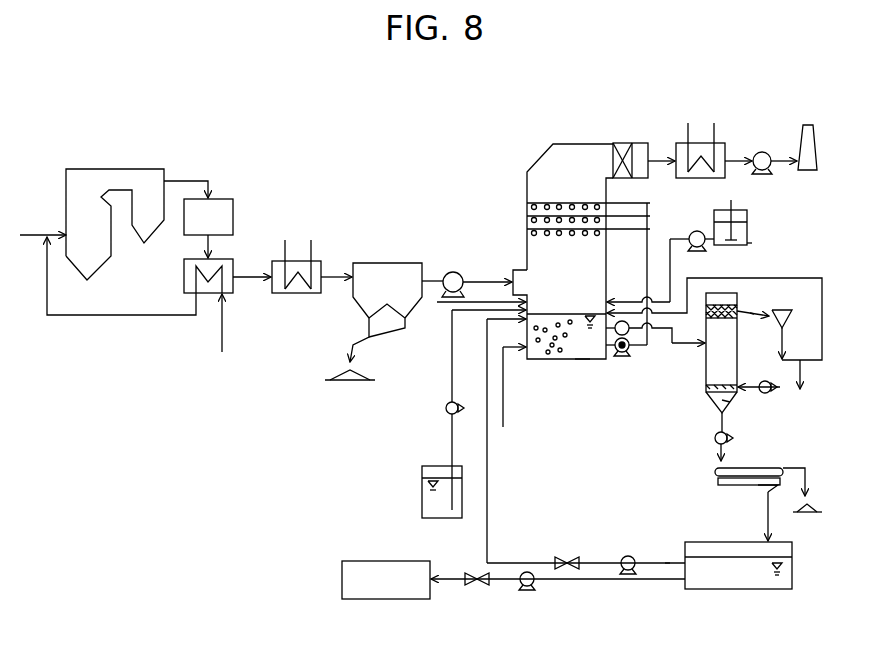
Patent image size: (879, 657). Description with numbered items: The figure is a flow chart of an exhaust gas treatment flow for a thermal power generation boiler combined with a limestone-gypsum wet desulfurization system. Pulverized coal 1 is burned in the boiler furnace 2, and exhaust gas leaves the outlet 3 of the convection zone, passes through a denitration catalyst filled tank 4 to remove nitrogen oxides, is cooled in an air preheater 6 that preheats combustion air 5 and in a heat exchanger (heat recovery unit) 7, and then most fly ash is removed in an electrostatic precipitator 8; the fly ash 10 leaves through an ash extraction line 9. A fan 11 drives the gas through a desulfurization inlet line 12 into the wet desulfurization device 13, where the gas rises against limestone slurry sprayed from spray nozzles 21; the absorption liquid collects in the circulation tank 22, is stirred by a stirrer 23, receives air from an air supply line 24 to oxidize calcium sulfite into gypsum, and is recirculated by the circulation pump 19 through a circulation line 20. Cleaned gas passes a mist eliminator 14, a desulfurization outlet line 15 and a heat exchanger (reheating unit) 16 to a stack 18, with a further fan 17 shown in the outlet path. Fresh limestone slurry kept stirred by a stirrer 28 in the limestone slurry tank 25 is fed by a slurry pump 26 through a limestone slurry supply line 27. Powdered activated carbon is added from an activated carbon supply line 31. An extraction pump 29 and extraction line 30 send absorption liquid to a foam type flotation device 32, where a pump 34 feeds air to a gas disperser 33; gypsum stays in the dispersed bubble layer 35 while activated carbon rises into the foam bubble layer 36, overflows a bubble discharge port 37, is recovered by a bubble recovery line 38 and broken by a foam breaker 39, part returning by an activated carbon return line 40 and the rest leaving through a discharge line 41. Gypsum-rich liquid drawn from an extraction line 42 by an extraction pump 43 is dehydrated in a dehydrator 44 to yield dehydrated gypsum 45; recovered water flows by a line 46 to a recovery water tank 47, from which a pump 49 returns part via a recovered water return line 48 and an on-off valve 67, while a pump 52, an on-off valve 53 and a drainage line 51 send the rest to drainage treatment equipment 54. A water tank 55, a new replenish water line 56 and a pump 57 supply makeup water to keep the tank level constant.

The pulverized coal 1 is at (108, 245).
The boiler furnace 2 is at (115, 196).
The outlet of convection zone 3 is at (186, 159).
The denitration catalyst filled tank 4 is at (236, 228).
The combustion air 5 is at (195, 326).
The air preheater 6 is at (182, 278).
The heat exchanger (heat recovery unit) 7 is at (292, 300).
The electrostatic precipitator 8 is at (396, 282).
The ash extraction line 9 is at (390, 343).
The fly ash 10 is at (350, 406).
The fan 11 is at (453, 256).
The desulfurization inlet line 12 is at (487, 252).
The wet desulfurization device 13 is at (541, 251).
The mist eliminator 14 is at (630, 134).
The desulfurization outlet line 15 is at (661, 133).
The heat exchanger (reheating unit) 16 is at (710, 134).
The fan 17 is at (761, 132).
The stack 18 is at (803, 175).
The desulfurization/absorption liquid circulation pump 19 is at (627, 309).
The circulation line 20 is at (694, 270).
The spray nozzles 21 is at (560, 213).
The circulation tank 22 is at (587, 386).
The stirrer 23 is at (553, 366).
The air supply line 24 is at (533, 392).
The limestone slurry tank 25 is at (777, 252).
The slurry pump 26 is at (701, 220).
The limestone slurry supply line 27 is at (676, 217).
The stirrer 28 is at (749, 220).
The extraction pump 29 is at (638, 281).
The extraction line 30 is at (639, 346).
The activated carbon supply line 31 is at (474, 432).
The foam type flotation device 32 is at (722, 379).
The gas disperser 33 is at (742, 418).
The pump 34 is at (774, 408).
The dispersed bubble layer 35 is at (741, 353).
The foam bubble layer 36 is at (689, 328).
The bubble discharge port 37 is at (754, 300).
The bubble recovery line 38 is at (757, 331).
The foam breaker 39 is at (795, 334).
The activated carbon return line 40 is at (724, 300).
The discharge line 41 is at (822, 375).
The extraction line 42 is at (699, 422).
The extraction pump 43 is at (743, 446).
The dehydrator 44 is at (744, 491).
The dehydrated gypsum 45 is at (808, 531).
The line 46 is at (748, 513).
The recovery water tank 47 is at (738, 591).
The recovered water return line 48 is at (670, 538).
The pump 49 is at (586, 542).
The drainage line 51 is at (558, 607).
The pump 52 is at (520, 605).
The on-off valve 53 is at (468, 605).
The drainage treatment equipment 54 is at (358, 580).
The water tank 55 is at (411, 469).
The new replenish water line 56 is at (421, 385).
The pump 57 is at (422, 412).
The on-off valve 67 is at (567, 543).